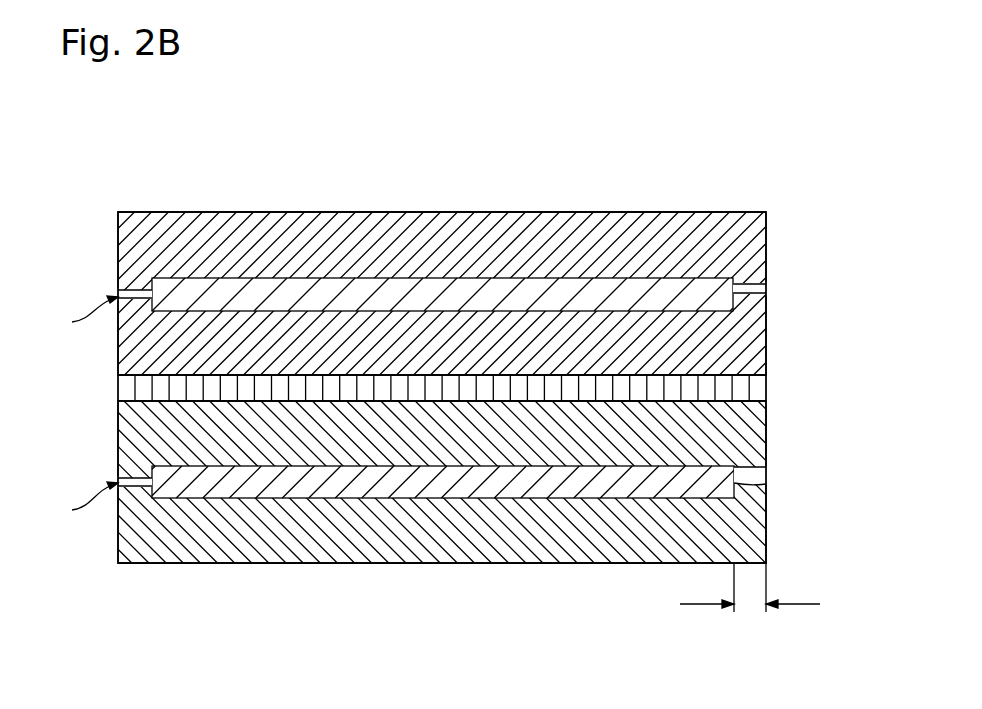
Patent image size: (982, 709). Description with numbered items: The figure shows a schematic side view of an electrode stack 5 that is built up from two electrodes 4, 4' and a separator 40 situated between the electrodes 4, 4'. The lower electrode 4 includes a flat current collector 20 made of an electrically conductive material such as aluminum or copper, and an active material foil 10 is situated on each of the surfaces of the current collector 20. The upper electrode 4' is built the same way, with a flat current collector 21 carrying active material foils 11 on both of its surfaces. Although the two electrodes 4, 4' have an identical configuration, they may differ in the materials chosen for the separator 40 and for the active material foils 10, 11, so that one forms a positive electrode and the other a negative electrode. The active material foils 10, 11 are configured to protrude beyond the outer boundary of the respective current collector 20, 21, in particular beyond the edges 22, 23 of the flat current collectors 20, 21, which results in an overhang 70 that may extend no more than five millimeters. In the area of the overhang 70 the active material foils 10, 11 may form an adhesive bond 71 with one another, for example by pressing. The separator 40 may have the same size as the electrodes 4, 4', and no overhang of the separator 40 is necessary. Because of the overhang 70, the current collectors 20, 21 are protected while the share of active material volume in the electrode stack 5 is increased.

The electrode stack 5 is at (693, 140).
The electrode 4 is at (499, 482).
The electrode 4' is at (503, 293).
The active material foil 10 is at (190, 556).
The active material foil 11 is at (207, 227).
The current collector 20 is at (290, 498).
The current collector 21 is at (285, 287).
The edge of current collector 22 is at (138, 478).
The edge of current collector 23 is at (140, 291).
The separator 40 is at (760, 388).
The overhang 70 is at (752, 603).
The adhesive bond 71 is at (79, 410).